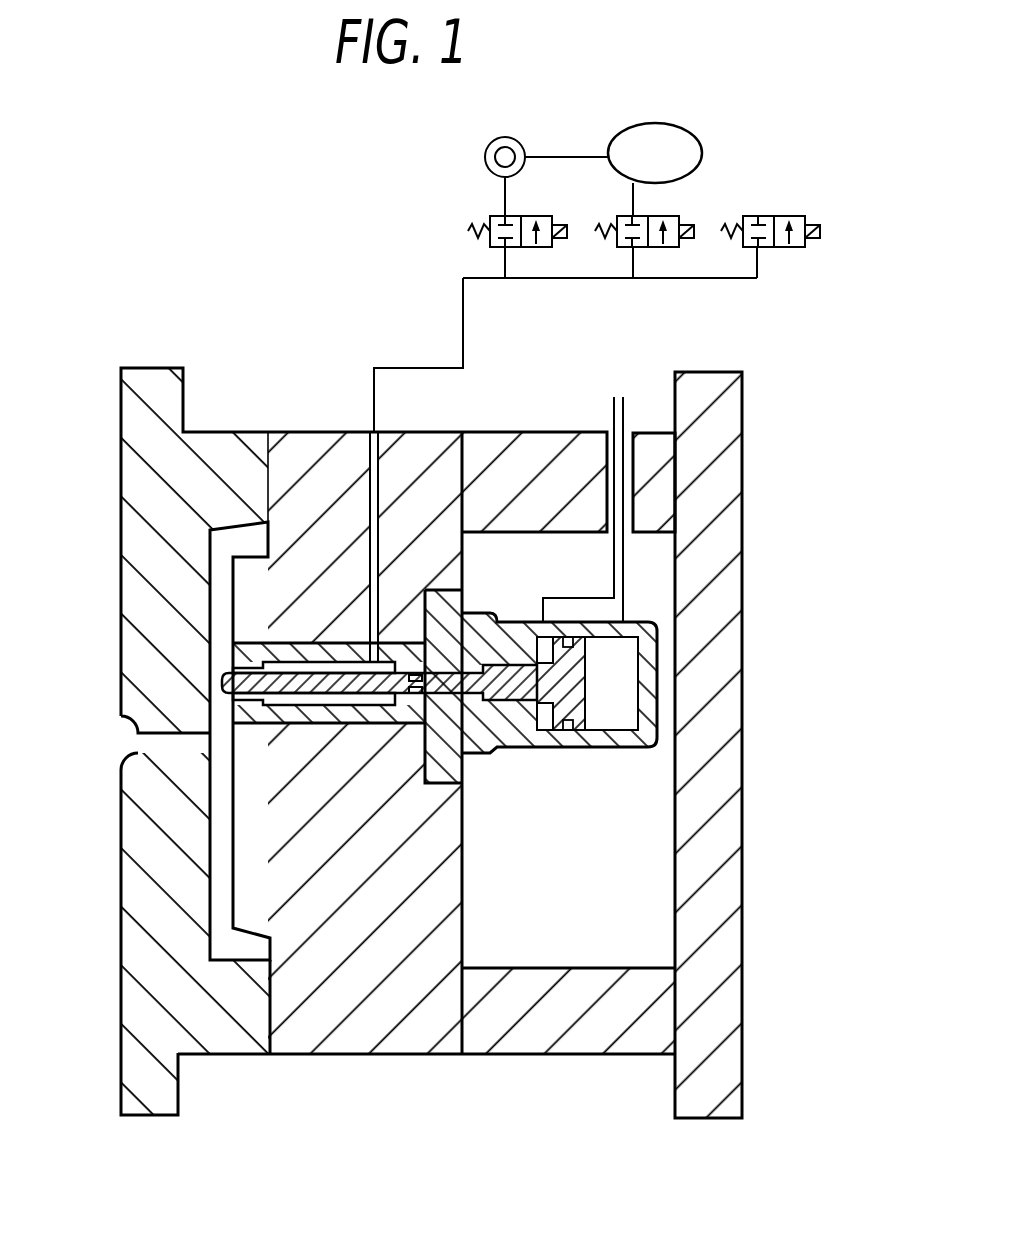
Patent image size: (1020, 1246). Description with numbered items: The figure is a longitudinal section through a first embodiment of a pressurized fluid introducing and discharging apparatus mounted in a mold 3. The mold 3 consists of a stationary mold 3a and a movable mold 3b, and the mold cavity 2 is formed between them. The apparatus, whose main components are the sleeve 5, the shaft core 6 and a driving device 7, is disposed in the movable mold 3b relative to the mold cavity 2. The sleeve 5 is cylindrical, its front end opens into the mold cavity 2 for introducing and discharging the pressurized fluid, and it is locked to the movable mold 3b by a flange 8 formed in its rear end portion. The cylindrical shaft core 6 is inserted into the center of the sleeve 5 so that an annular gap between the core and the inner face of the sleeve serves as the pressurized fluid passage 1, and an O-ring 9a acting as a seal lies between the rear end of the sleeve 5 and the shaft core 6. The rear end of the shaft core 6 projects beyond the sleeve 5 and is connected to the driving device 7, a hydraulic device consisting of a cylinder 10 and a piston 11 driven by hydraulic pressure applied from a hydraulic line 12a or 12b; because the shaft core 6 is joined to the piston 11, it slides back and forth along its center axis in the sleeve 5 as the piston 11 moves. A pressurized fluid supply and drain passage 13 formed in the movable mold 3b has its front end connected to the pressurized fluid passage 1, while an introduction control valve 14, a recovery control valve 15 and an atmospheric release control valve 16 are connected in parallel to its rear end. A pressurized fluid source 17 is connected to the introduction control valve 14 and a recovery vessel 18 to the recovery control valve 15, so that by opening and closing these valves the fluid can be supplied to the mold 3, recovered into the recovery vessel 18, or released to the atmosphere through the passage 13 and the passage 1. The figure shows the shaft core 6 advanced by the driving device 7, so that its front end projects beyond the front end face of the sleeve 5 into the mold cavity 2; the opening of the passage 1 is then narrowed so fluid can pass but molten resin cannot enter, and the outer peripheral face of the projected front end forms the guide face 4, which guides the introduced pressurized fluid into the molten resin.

The pressurized fluid passage 1 is at (239, 797).
The mold cavity 2 is at (213, 877).
The mold 3 is at (398, 674).
The stationary mold 3a is at (215, 440).
The movable mold 3b is at (207, 348).
The guide face 4 is at (222, 680).
The sleeve 5 is at (320, 705).
The shaft core 6 is at (298, 690).
The driving device 7 is at (556, 755).
The flange 8 is at (456, 760).
The O-ring 9a is at (480, 622).
The cylinder 10 is at (632, 748).
The piston 11 is at (588, 677).
The hydraulic line 12a is at (623, 400).
The hydraulic line 12b is at (612, 404).
The pressurized fluid supply and drain passage 13 is at (378, 497).
The introduction control valve 14 is at (548, 216).
The recovery control valve 15 is at (675, 216).
The atmospheric release control valve 16 is at (795, 216).
The pressurized fluid source 17 is at (485, 160).
The recovery vessel 18 is at (697, 134).